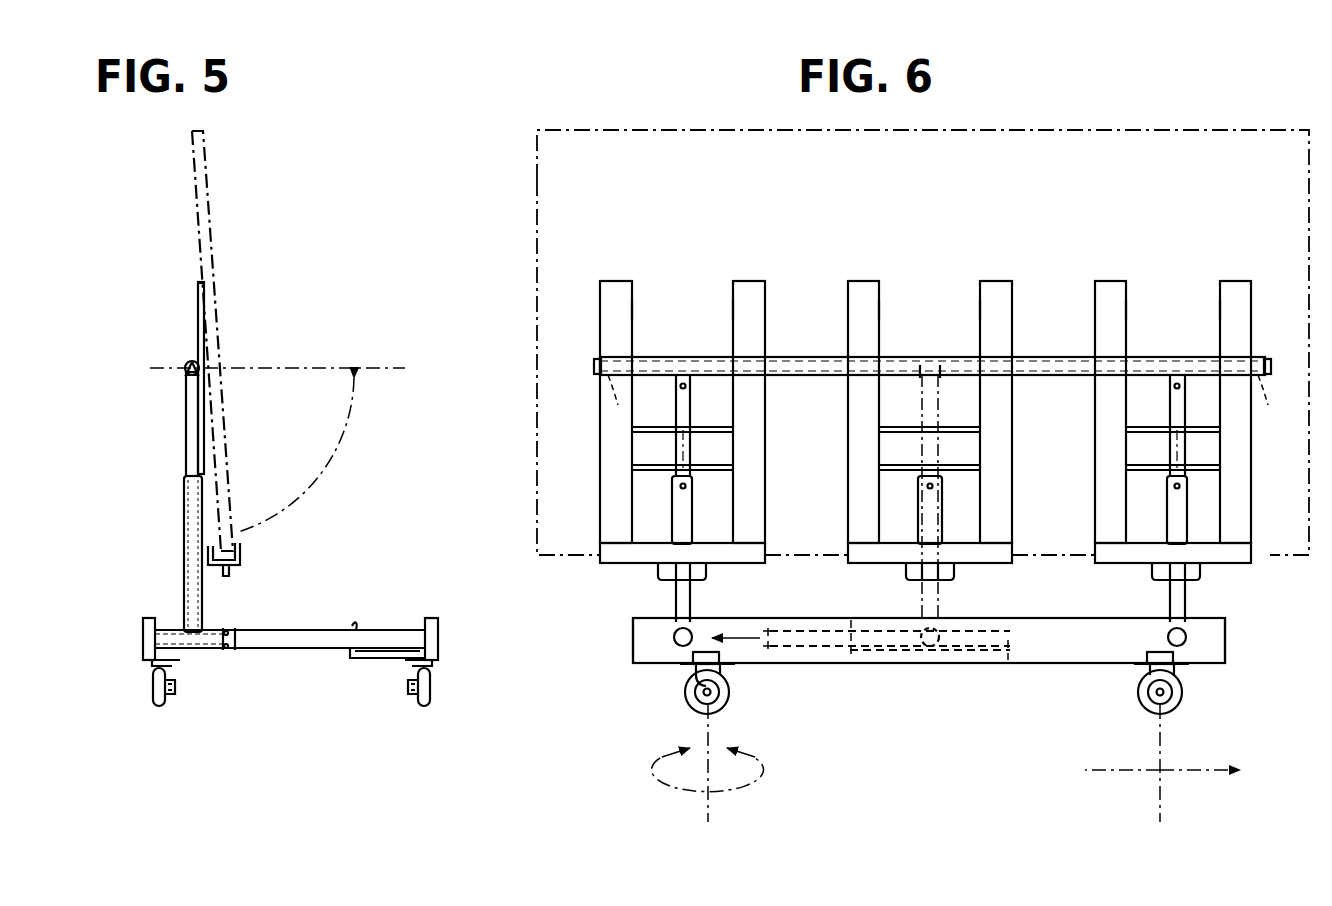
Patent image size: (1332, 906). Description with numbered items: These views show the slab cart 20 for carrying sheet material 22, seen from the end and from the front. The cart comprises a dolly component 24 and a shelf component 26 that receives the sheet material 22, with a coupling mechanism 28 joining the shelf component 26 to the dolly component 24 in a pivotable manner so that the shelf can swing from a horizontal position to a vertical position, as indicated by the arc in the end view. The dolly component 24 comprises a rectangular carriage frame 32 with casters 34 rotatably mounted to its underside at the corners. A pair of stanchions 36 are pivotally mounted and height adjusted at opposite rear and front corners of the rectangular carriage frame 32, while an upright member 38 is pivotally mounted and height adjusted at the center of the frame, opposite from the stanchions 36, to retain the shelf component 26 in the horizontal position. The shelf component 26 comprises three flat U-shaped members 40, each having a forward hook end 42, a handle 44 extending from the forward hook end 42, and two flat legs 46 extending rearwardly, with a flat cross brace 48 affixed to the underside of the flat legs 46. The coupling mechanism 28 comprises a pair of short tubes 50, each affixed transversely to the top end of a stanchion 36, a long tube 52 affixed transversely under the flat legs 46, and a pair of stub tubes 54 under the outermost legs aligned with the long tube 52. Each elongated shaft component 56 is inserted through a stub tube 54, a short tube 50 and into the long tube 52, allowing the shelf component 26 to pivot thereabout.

In FIG. 5, the slab cart 20 is at (150, 592).
In FIG. 6, the slab cart 20 is at (632, 638).
In FIG. 5, the sheet material 22 is at (212, 228).
In FIG. 6, the sheet material 22 is at (533, 157).
In FIG. 5, the dolly component 24 is at (140, 638).
In FIG. 6, the dolly component 24 is at (630, 652).
In FIG. 5, the shelf component 26 is at (197, 310).
In FIG. 6, the shelf component 26 is at (612, 278).
In FIG. 5, the coupling mechanism 28 is at (184, 372).
In FIG. 6, the coupling mechanism 28 is at (808, 355).
In FIG. 5, the rectangular carriage frame 32 is at (442, 642).
In FIG. 6, the rectangular carriage frame 32 is at (1232, 652).
In FIG. 5, the casters 34 is at (164, 708).
In FIG. 6, the casters 34 is at (730, 696).
In FIG. 5, the stanchions 36 is at (183, 524).
In FIG. 6, the stanchions 36 is at (674, 598).
In FIG. 5, the upright member 38 is at (400, 640).
In FIG. 6, the upright member 38 is at (912, 602).
In FIG. 5, the flat U-shaped members 40 is at (248, 546).
In FIG. 6, the flat U-shaped members 40 is at (598, 330).
In FIG. 5, the forward hook end 42 is at (243, 558).
In FIG. 6, the forward hook end 42 is at (632, 550).
In FIG. 5, the handle 44 is at (226, 575).
In FIG. 6, the handle 44 is at (708, 578).
In FIG. 5, the flat legs 46 is at (200, 300).
In FIG. 6, the flat legs 46 is at (736, 343).
In FIG. 5, the flat cross brace 48 is at (196, 455).
In FIG. 6, the flat cross brace 48 is at (808, 450).
In FIG. 6, the short tubes 50 is at (700, 375).
In FIG. 6, the long tube 52 is at (1047, 366).
In FIG. 6, the stub tubes 54 is at (618, 398).
In FIG. 5, the elongated shaft components 56 is at (188, 362).
In FIG. 6, the elongated shaft components 56 is at (594, 368).